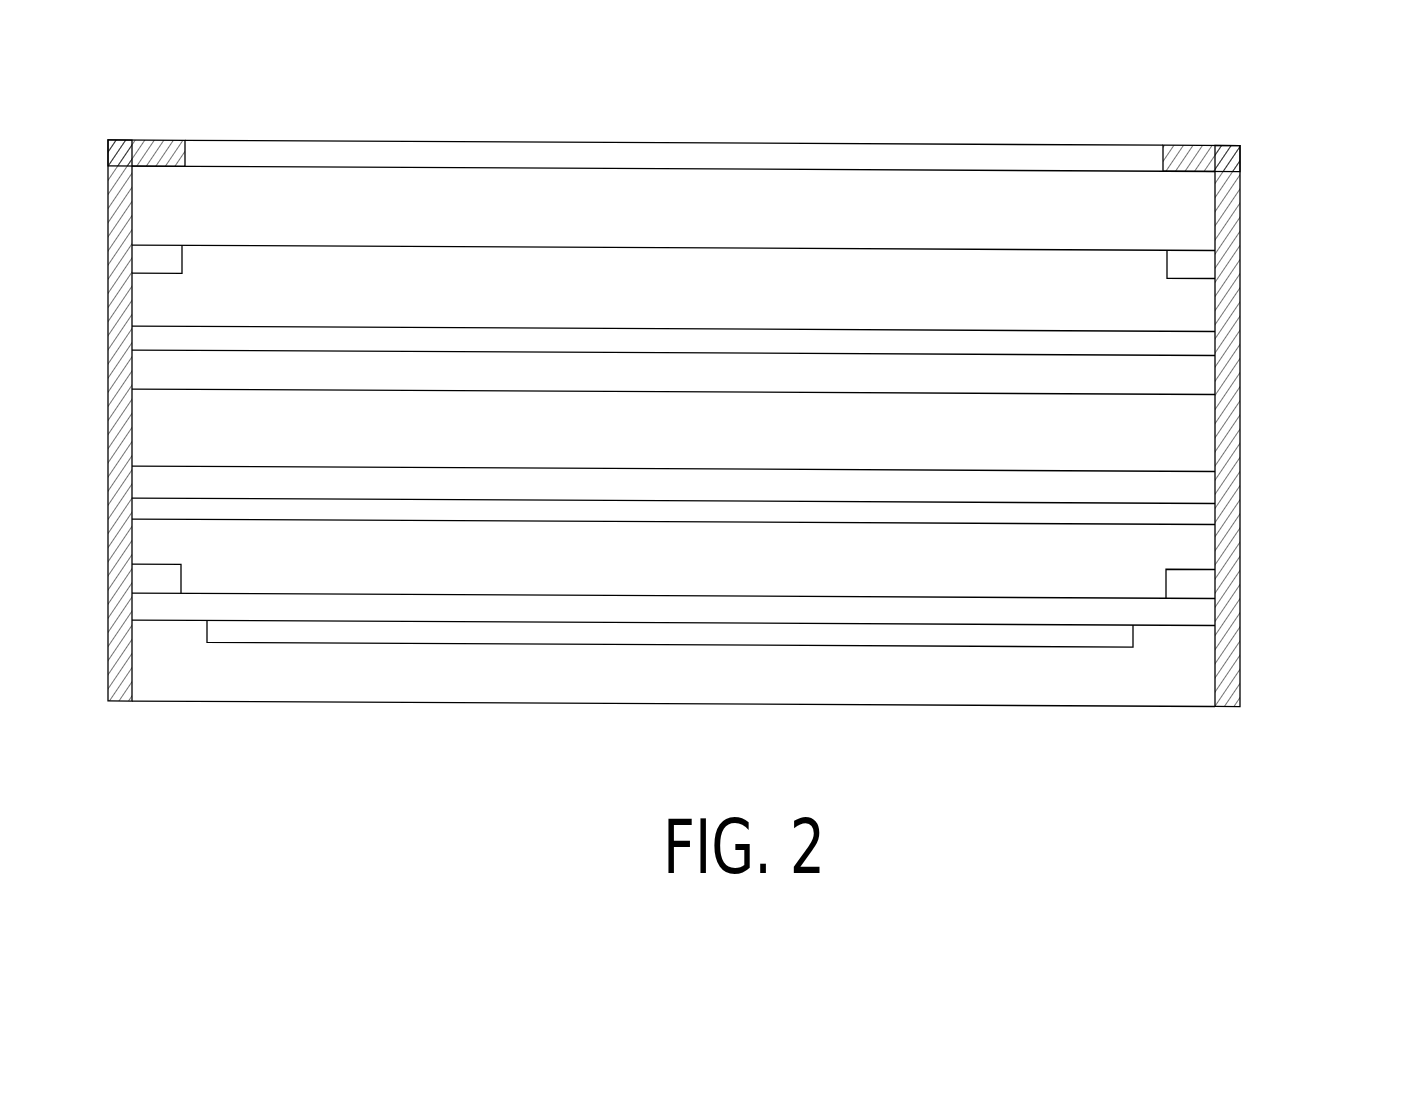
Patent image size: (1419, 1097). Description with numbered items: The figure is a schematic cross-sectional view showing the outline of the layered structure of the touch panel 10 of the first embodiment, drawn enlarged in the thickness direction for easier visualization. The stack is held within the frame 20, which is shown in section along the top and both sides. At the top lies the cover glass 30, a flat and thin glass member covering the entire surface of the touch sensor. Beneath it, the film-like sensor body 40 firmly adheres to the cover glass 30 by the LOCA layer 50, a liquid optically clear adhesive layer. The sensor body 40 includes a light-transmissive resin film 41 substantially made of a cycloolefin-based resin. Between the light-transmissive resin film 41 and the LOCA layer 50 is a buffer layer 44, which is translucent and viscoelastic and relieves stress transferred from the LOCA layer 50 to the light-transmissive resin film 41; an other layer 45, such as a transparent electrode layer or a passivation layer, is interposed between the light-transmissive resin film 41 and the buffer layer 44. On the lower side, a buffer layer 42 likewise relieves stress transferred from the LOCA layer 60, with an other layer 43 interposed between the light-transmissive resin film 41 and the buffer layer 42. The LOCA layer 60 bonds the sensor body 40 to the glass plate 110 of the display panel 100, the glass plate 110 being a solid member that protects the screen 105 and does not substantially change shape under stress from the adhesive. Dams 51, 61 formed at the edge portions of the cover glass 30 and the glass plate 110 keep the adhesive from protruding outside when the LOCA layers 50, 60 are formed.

The touch panel 10 is at (655, 118).
The frame 20 is at (1226, 158).
The cover glass 30 is at (1170, 222).
The sensor body 40 is at (744, 437).
The light-transmissive resin film 41 is at (1187, 440).
The buffer layer 42 is at (713, 514).
The other layer 43 is at (1190, 483).
The buffer layer 44 is at (1183, 348).
The other layer 45 is at (1185, 380).
The LOCA layer 50 is at (1182, 310).
The dam 51 is at (140, 263).
The LOCA layer 60 is at (1198, 553).
The dam 61 is at (160, 581).
The display panel 100 is at (764, 655).
The screen 105 is at (1125, 638).
The glass plate 110 is at (1192, 616).